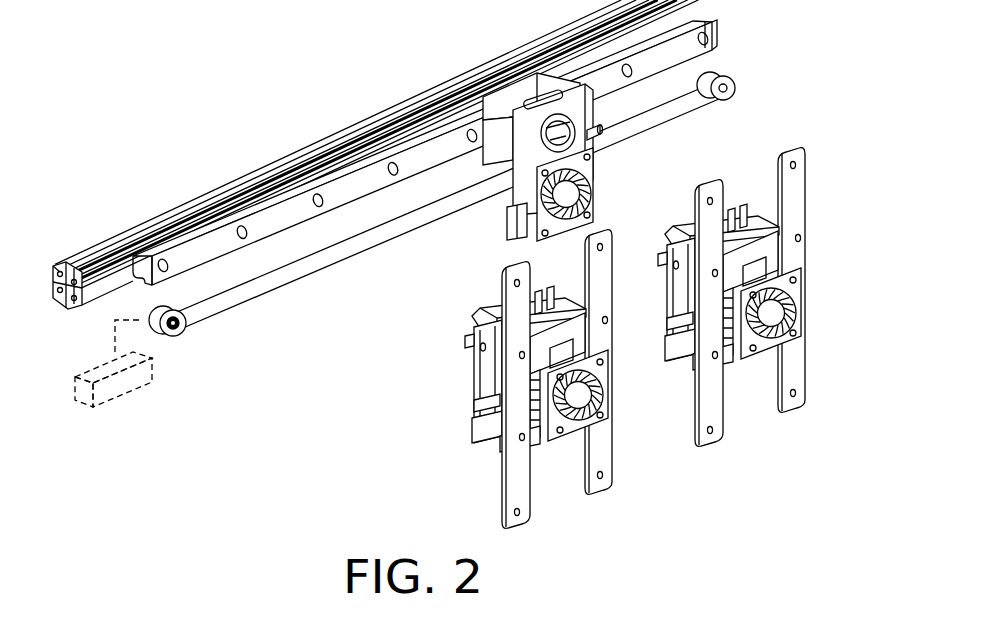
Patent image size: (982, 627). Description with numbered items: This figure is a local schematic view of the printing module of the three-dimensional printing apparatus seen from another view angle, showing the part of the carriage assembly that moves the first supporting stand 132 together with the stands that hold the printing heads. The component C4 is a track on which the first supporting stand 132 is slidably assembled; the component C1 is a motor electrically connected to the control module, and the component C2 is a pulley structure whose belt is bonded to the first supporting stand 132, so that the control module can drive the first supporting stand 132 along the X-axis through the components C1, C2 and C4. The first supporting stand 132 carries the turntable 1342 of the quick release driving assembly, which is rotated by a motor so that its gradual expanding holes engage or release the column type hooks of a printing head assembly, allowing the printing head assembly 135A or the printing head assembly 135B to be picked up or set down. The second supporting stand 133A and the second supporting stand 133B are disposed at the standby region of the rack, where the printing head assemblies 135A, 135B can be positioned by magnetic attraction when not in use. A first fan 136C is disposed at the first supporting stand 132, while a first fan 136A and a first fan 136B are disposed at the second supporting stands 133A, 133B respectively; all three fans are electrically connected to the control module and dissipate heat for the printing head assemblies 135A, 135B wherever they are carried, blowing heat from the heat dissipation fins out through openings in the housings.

The first supporting stand 132 is at (588, 131).
The turntable 1342 is at (602, 133).
The first fan 136C is at (594, 200).
The printing head assembly 135A is at (767, 286).
The second supporting stand 133A is at (760, 228).
The first fan 136A is at (781, 312).
The printing head assembly 135B is at (530, 379).
The second supporting stand 133B is at (540, 330).
The first fan 136B is at (588, 398).
The track C4 is at (120, 238).
The pulley structure C2 is at (184, 348).
The motor C1 is at (80, 400).